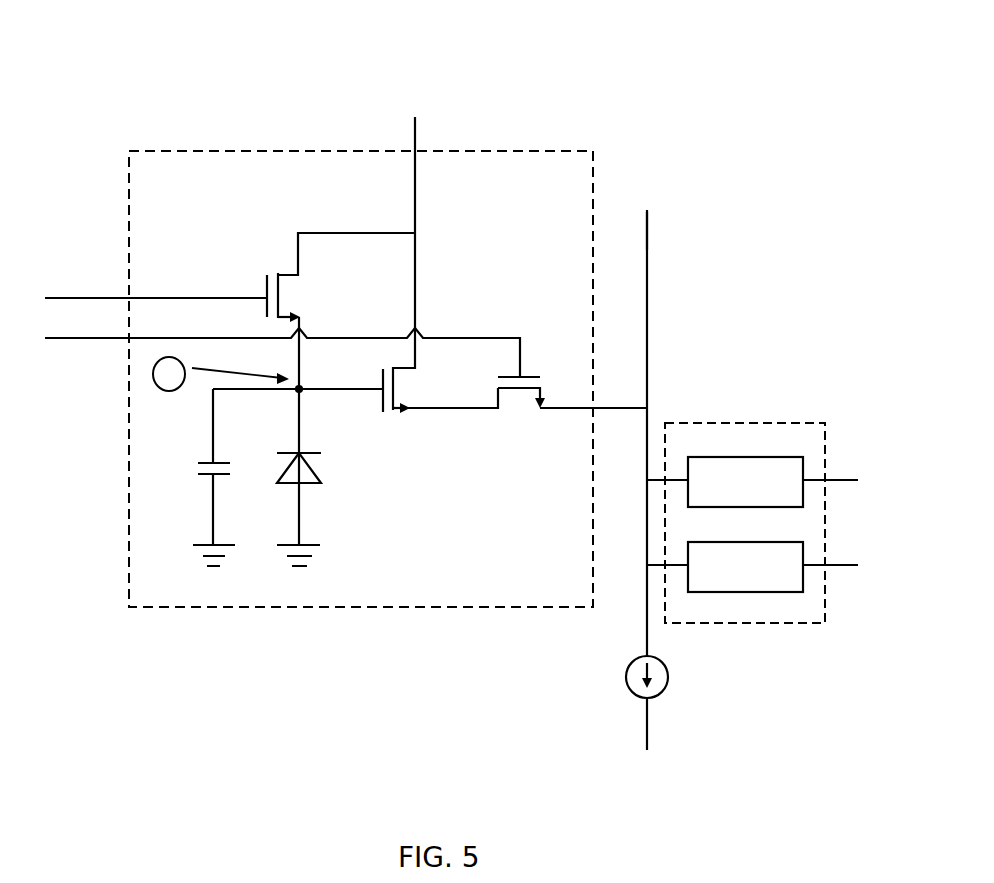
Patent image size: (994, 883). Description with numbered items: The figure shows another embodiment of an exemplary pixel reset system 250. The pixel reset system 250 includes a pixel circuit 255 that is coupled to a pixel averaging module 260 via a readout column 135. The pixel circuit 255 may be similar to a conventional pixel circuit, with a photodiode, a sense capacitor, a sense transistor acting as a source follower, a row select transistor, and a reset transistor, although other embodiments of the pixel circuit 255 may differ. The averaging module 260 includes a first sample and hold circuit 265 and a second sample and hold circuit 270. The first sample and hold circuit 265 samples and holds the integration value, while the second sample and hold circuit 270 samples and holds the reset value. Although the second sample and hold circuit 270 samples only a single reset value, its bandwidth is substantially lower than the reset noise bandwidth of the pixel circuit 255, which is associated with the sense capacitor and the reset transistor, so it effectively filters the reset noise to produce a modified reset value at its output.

The pixel reset system 250 is at (643, 40).
The pixel circuit 255 is at (237, 151).
The readout column 135 is at (647, 245).
The pixel averaging module 260 is at (738, 423).
The first sample and hold circuit 265 is at (752, 457).
The second sample and hold circuit 270 is at (753, 582).